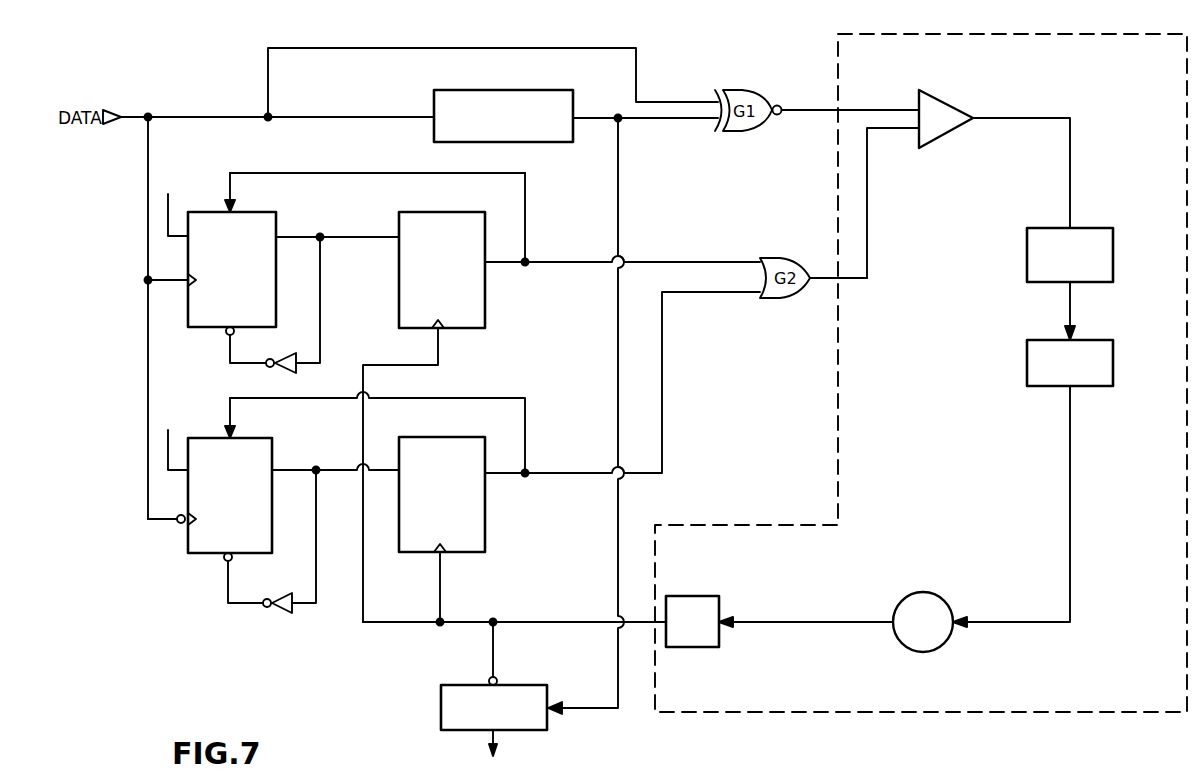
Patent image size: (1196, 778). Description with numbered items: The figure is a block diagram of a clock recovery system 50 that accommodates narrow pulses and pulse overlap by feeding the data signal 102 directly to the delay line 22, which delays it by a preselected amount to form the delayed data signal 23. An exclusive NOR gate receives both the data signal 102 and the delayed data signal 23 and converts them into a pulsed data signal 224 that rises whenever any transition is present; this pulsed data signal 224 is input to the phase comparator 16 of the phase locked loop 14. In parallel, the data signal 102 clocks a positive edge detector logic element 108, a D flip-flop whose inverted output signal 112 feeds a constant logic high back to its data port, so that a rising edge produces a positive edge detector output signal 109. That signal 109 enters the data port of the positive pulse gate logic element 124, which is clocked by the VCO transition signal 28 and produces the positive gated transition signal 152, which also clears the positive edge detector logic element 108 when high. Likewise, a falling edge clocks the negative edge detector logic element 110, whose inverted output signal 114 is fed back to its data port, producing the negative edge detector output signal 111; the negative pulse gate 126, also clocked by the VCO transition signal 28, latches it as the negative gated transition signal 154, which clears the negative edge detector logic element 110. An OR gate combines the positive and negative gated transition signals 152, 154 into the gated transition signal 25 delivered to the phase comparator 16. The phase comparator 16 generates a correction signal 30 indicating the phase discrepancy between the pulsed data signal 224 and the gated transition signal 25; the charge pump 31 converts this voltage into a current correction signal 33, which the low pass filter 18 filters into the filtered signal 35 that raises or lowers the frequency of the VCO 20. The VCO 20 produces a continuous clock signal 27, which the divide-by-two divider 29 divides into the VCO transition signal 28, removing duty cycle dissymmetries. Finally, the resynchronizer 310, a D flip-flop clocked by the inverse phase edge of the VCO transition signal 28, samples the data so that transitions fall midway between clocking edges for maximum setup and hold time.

The data signal 102 is at (187, 117).
The delay line 22 is at (434, 108).
The delayed data signal 23 is at (667, 120).
The pulsed data signal 224 is at (806, 108).
The phase comparator 16 is at (952, 98).
The gated transition signal 25 is at (867, 236).
The correction signal 30 is at (1070, 160).
The charge pump 31 is at (1113, 252).
The current correction signal 33 is at (1070, 307).
The low pass filter 18 is at (1113, 364).
The filtered signal 35 is at (1070, 452).
The VCO 20 is at (944, 642).
The clock signal 27 is at (838, 625).
The divider 29 is at (708, 648).
The VCO transition signal 28 is at (532, 624).
The resynchronizer 310 is at (441, 707).
The clock recovery system 50 is at (406, 746).
The phase locked loop 14 is at (983, 712).
The positive edge detector logic element 108 is at (188, 311).
The positive edge detector output signal 112 is at (172, 212).
The positive edge detector output signal 109 is at (352, 234).
The positive pulse gate logic element 124 is at (485, 318).
The positive gated transition signal 152 is at (561, 265).
The negative edge detector logic element 110 is at (188, 541).
The negative edge detector inverted output signal 114 is at (170, 446).
The negative edge detector output signal 111 is at (340, 472).
The negative pulse gate 126 is at (485, 543).
The negative gated transition signal 154 is at (548, 480).